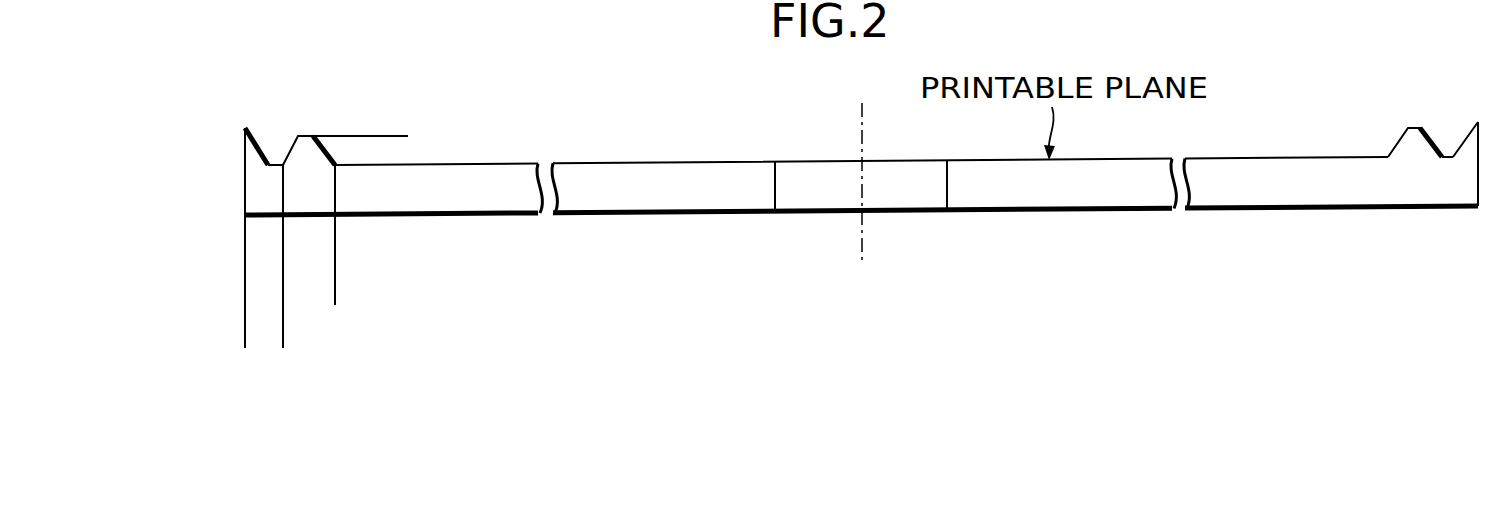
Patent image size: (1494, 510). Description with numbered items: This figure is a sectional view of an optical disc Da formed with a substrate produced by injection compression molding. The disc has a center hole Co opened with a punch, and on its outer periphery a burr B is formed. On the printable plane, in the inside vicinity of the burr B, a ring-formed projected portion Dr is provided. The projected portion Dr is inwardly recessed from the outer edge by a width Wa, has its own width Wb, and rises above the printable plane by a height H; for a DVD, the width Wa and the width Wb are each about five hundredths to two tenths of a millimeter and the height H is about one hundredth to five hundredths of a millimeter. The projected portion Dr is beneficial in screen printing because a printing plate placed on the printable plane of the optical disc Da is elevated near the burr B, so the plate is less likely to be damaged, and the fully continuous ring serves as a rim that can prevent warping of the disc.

The burr B is at (245, 125).
The projected portion Dr is at (303, 127).
The height H is at (399, 165).
The width Wa is at (192, 328).
The width Wb is at (230, 273).
The optical disc Da is at (608, 269).
The center hole Co is at (947, 175).